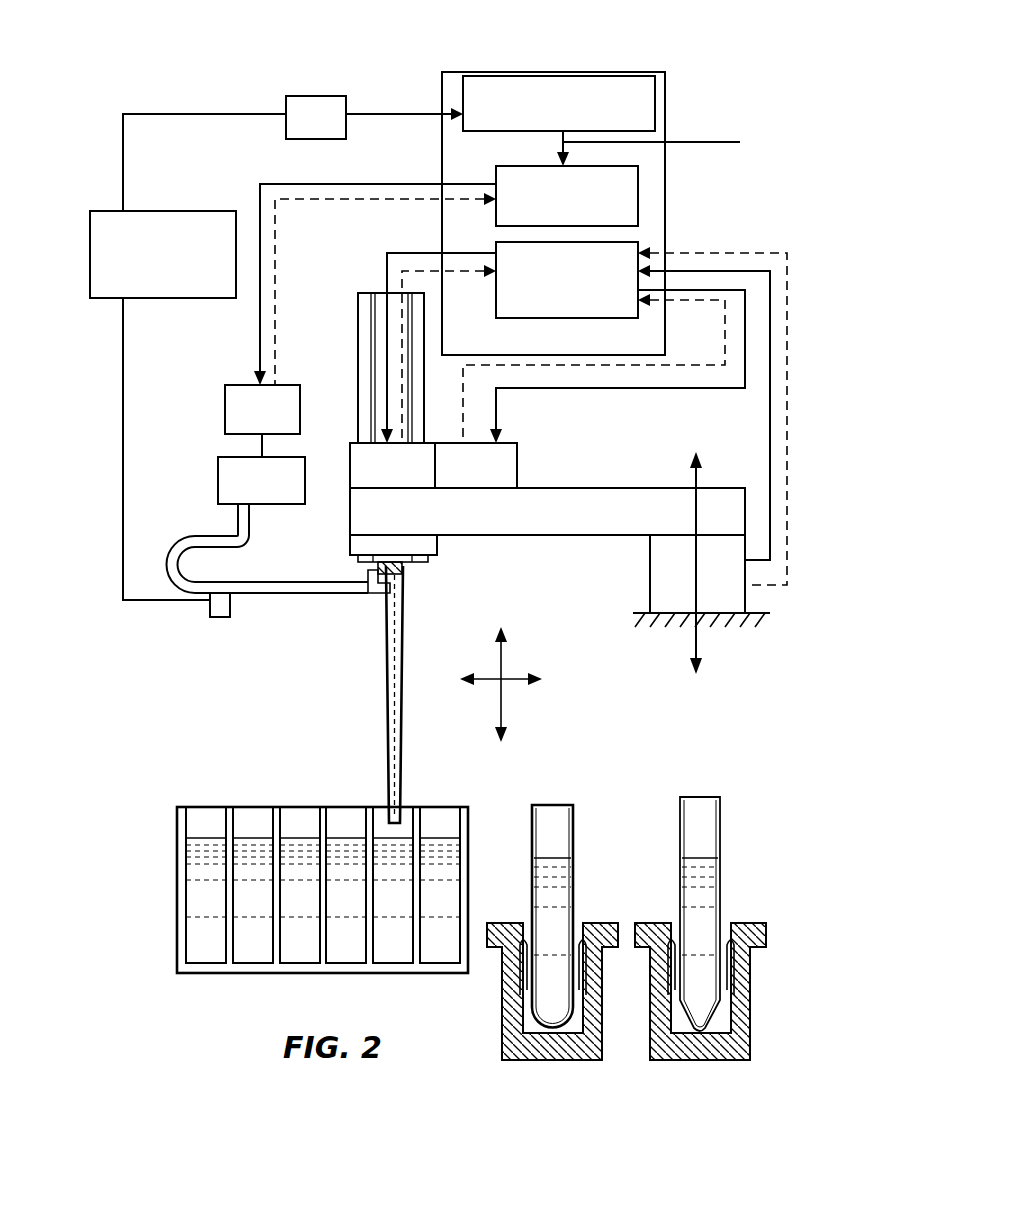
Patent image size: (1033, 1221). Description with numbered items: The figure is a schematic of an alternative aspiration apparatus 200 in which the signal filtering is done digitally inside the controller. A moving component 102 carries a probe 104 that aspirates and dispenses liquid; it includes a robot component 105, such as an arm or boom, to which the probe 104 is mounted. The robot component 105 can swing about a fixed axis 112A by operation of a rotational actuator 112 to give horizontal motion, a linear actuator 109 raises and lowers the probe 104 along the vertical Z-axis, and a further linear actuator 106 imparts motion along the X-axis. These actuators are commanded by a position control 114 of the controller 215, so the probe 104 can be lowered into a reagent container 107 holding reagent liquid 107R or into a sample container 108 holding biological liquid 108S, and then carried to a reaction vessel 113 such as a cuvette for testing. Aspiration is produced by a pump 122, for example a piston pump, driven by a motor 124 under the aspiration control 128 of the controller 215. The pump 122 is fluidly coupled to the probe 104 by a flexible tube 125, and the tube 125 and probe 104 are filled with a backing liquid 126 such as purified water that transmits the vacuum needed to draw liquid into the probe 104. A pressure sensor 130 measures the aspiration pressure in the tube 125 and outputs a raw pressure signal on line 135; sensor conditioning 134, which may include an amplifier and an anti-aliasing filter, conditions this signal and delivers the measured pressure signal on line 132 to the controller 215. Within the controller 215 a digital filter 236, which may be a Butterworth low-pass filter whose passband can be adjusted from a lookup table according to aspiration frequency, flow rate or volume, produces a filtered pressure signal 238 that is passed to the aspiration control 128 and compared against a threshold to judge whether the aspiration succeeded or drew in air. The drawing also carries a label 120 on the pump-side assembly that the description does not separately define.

The aspiration apparatus 200 is at (244, 94).
The line 132 is at (180, 113).
The sensor conditioning 134 is at (160, 298).
The line 135 is at (124, 393).
The controller 215 is at (678, 126).
The digital filter 236 is at (480, 131).
The filtered pressure signal 238 is at (740, 142).
The aspiration control 128 is at (638, 200).
The position control 114 is at (638, 308).
The moving component 102 is at (348, 337).
The linear actuator 109 is at (358, 452).
The linear actuator 106 is at (503, 463).
The robot component 105 is at (588, 510).
The motor 124 is at (225, 399).
The pump 122 is at (218, 475).
The flexible tube 125 is at (292, 588).
The pressure sensor 130 is at (222, 620).
The aspiration assembly 120 is at (220, 680).
The backing liquid 126 is at (398, 600).
The probe 104 is at (375, 767).
The rotational actuator 112 is at (650, 568).
The fixed axis 112A is at (700, 642).
The reagent container 107 is at (177, 855).
The reagent liquid 107R is at (400, 862).
The sample container 108 is at (573, 826).
The biological liquid 108S is at (553, 902).
The reaction vessel 113 is at (720, 840).